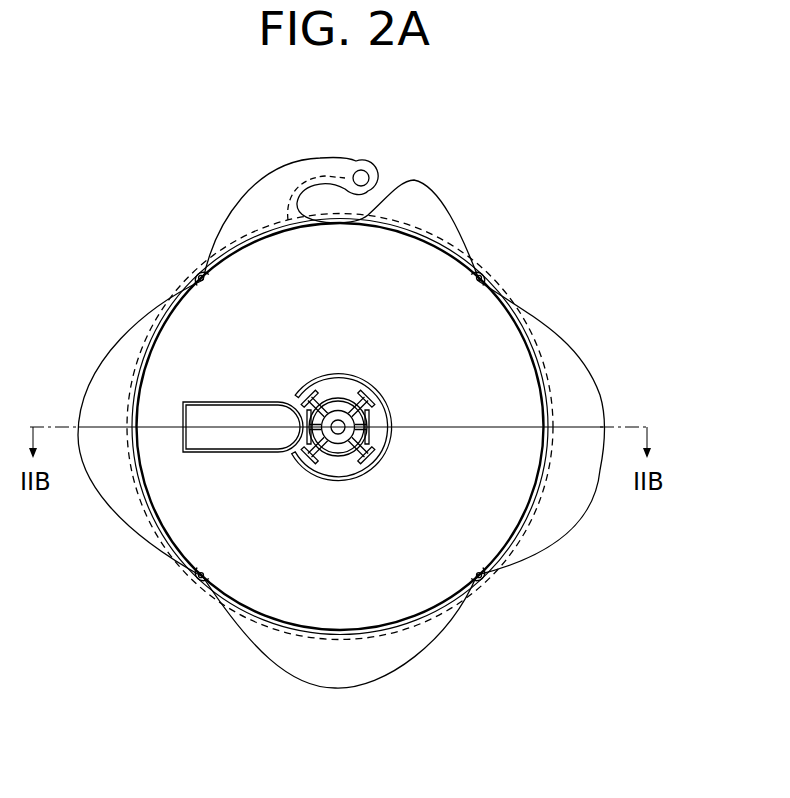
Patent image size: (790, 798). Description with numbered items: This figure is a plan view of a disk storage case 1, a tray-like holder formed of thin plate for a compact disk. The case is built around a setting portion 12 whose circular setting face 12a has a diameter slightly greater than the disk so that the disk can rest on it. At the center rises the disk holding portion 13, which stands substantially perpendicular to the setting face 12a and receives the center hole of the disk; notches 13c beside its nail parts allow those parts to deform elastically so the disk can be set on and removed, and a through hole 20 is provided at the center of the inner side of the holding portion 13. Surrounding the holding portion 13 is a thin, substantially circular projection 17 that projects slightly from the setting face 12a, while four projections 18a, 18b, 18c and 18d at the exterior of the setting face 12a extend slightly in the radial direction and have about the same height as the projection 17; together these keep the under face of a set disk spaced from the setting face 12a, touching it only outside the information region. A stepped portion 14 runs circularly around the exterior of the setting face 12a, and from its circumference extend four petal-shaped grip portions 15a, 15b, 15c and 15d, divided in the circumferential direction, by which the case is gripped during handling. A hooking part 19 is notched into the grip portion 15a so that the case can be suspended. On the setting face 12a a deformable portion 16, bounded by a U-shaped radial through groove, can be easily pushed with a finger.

The disk storage case 1 is at (480, 249).
The setting portion 12 is at (466, 334).
The setting face 12a is at (507, 373).
The disk holding portion 13 is at (391, 393).
The notches 13c is at (331, 396).
The stepped portion 14 is at (515, 552).
The grip portion 15a is at (292, 180).
The grip portion 15b is at (587, 411).
The grip portion 15c is at (355, 668).
The grip portion 15d is at (95, 458).
The deformable portion 16 is at (238, 422).
The projection 17 is at (368, 397).
The projection 18a is at (484, 265).
The projection 18b is at (203, 268).
The projection 18c is at (207, 583).
The projection 18d is at (474, 583).
The hooking part 19 is at (328, 200).
The through hole 20 is at (338, 434).